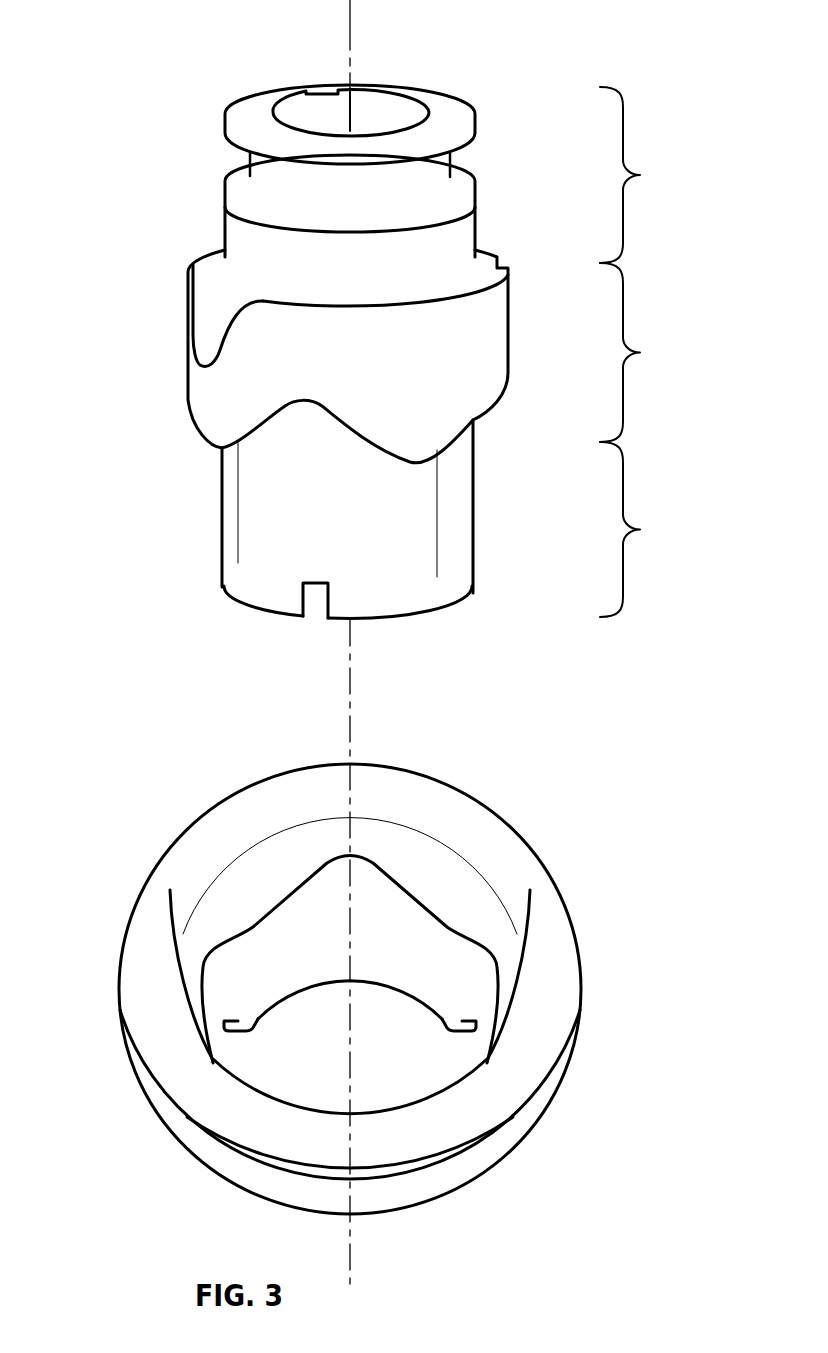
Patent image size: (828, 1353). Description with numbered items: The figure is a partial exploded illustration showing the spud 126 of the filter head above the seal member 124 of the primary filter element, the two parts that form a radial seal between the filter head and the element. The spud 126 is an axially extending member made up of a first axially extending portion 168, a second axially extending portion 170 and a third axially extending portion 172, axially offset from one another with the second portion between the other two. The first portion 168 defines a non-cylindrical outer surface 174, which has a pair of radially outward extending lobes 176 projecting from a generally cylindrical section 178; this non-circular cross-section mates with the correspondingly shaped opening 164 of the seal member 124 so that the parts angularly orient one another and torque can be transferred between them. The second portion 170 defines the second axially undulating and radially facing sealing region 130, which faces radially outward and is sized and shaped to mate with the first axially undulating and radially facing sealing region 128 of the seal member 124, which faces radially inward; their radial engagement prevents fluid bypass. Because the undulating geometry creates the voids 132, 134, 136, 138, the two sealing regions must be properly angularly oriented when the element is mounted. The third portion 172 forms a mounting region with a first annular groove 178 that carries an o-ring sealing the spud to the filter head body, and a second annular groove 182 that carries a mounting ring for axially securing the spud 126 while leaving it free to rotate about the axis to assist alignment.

The seal member 124 is at (542, 887).
The spud 126 is at (455, 330).
The first axially undulating and radially facing sealing region 128 is at (226, 1023).
The second axially undulating and radially facing sealing region 130 is at (202, 380).
The void 132 is at (193, 313).
The void 134 is at (290, 448).
The void 136 is at (205, 878).
The void 138 is at (318, 889).
The opening 164 is at (392, 1012).
The first axially extending portion 168 is at (648, 529).
The second axially extending portion 170 is at (648, 352).
The third axially extending portion 172 is at (648, 175).
The non-cylindrical outer surface 174 is at (460, 547).
The radially outward extending lobes 176 is at (222, 549).
The generally cylindrical section / first annular groove 178 is at (205, 156).
The second annular groove 182 is at (203, 211).